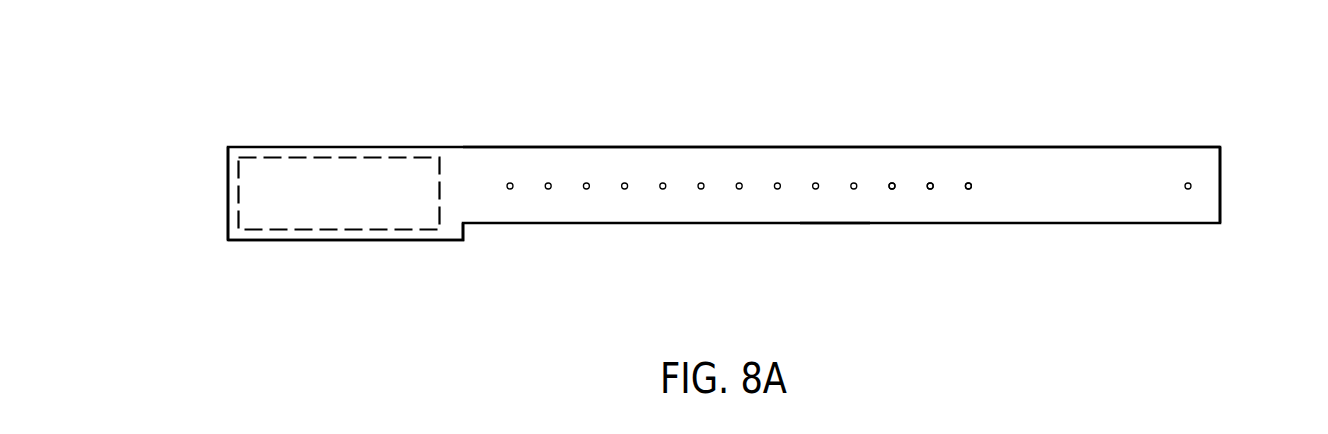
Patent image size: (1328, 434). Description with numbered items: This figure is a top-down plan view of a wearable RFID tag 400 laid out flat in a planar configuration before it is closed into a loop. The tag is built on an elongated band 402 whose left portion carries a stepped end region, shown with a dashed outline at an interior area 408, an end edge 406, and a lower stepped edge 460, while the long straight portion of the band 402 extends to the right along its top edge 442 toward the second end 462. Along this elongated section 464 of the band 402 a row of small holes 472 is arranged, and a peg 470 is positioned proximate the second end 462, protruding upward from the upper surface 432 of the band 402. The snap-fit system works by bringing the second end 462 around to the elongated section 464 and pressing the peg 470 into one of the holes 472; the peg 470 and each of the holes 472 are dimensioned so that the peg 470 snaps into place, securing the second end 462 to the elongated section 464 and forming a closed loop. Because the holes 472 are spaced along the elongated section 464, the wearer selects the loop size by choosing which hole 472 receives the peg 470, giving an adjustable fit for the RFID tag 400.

The RFID tag 400 is at (163, 110).
The band 402 is at (790, 147).
The first end of strap 406 is at (235, 173).
The electronics module region (dashed) 408 is at (345, 180).
The upper surface 432 is at (834, 214).
The top edge of strap 442 is at (623, 147).
The stepped lower portion at first end 460 is at (227, 222).
The second end 462 is at (1222, 168).
The elongated section 464 is at (563, 210).
The peg 470 is at (1183, 180).
The holes 472 is at (968, 190).